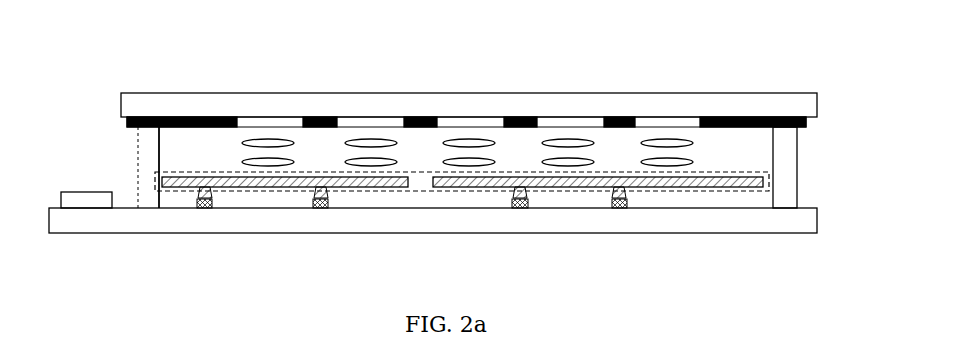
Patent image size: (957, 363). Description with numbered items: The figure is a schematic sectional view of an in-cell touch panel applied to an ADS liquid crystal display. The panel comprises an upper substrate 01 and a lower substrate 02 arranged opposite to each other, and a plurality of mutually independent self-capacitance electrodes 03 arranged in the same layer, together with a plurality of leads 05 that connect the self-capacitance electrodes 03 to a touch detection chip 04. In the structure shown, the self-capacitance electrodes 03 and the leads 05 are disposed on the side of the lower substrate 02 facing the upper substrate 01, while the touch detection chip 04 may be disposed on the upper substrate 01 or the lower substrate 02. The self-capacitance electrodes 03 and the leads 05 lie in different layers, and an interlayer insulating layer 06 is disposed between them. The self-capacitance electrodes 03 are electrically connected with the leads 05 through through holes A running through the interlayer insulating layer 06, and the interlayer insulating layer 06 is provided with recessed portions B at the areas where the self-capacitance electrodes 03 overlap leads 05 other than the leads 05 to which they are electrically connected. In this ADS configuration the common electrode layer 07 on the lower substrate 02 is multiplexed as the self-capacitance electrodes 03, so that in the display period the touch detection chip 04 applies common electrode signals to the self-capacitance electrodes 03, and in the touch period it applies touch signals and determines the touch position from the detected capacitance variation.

The upper substrate 01 is at (188, 98).
The lower substrate 02 is at (242, 223).
The self-capacitance electrodes 03 is at (717, 190).
The touch detection chip 04 is at (83, 200).
The leads 05 is at (323, 209).
The interlayer insulating layer 06 is at (762, 201).
The common electrode layer 07 is at (153, 183).
The through holes A is at (527, 200).
The recessed portions B is at (624, 200).